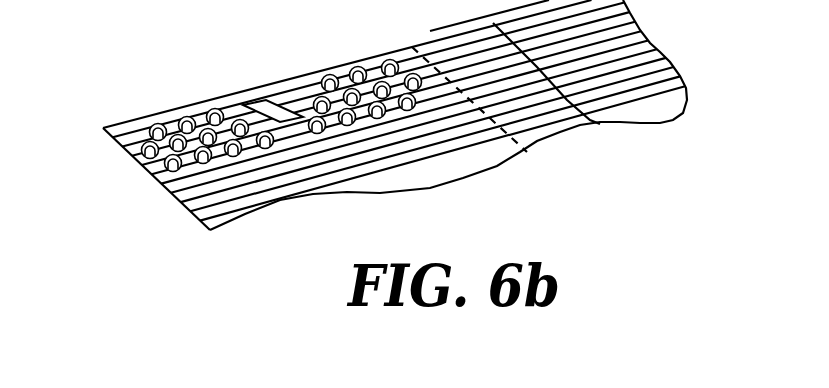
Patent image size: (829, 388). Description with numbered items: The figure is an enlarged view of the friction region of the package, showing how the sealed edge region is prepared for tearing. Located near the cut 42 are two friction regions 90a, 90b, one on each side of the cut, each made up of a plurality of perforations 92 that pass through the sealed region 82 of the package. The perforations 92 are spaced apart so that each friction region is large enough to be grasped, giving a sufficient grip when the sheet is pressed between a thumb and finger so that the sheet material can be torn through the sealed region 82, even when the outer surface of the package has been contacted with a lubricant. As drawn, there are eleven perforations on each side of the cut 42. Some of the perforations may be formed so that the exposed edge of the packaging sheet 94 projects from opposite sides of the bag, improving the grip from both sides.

The sealed region 82 is at (693, 78).
The cut 42 is at (262, 107).
The friction region 90a is at (168, 151).
The friction region 90b is at (392, 46).
The perforations 92 is at (196, 160).
The exposed edge of the packaging sheet 94 is at (230, 156).